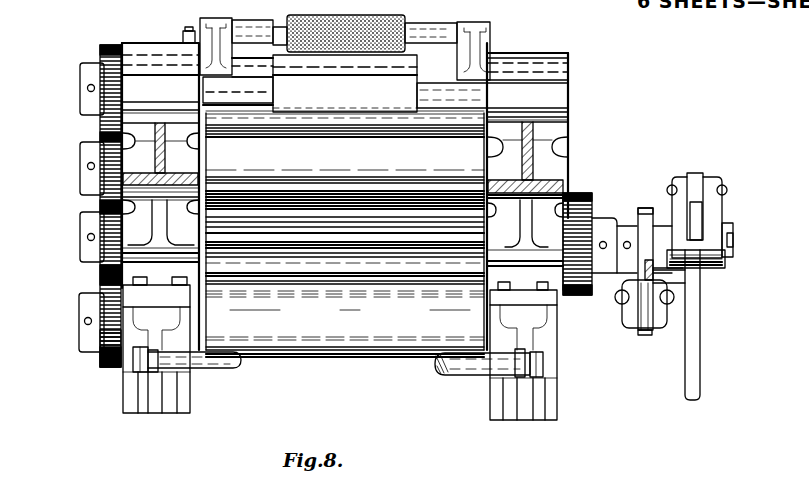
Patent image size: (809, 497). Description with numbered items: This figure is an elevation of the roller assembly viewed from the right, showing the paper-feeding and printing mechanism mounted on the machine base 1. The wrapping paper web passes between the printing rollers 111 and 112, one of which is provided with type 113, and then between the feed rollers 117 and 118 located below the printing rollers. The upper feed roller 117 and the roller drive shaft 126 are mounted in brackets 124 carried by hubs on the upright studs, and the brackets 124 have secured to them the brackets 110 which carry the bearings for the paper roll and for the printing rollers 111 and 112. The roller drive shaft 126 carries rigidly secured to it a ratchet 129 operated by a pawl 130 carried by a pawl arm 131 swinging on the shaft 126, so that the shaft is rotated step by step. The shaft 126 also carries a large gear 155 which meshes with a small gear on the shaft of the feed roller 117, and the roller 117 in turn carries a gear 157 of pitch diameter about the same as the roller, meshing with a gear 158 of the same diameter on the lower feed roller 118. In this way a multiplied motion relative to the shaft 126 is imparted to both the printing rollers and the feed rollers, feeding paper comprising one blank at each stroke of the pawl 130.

The frame base 1 is at (127, 398).
The brackets 110 is at (155, 165).
The upper printing roller 111 is at (380, 83).
The printing roller 112 is at (345, 230).
The type 113 is at (309, 55).
The upper feed roller 117 is at (358, 263).
The lower feed roller 118 is at (345, 299).
The brackets 124 is at (98, 270).
The roller drive shaft 126 is at (725, 233).
The ratchet 129 is at (648, 208).
The pawl 130 is at (643, 277).
The pawl arm 131 is at (662, 310).
The large gear 155 is at (578, 205).
The gear 157 is at (98, 262).
The gear 158 is at (98, 352).